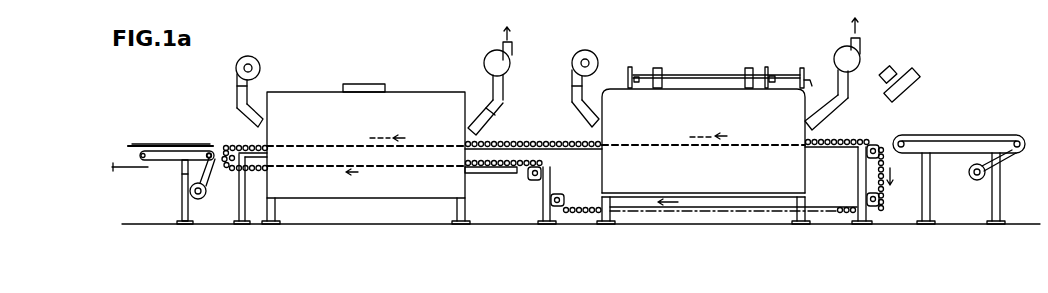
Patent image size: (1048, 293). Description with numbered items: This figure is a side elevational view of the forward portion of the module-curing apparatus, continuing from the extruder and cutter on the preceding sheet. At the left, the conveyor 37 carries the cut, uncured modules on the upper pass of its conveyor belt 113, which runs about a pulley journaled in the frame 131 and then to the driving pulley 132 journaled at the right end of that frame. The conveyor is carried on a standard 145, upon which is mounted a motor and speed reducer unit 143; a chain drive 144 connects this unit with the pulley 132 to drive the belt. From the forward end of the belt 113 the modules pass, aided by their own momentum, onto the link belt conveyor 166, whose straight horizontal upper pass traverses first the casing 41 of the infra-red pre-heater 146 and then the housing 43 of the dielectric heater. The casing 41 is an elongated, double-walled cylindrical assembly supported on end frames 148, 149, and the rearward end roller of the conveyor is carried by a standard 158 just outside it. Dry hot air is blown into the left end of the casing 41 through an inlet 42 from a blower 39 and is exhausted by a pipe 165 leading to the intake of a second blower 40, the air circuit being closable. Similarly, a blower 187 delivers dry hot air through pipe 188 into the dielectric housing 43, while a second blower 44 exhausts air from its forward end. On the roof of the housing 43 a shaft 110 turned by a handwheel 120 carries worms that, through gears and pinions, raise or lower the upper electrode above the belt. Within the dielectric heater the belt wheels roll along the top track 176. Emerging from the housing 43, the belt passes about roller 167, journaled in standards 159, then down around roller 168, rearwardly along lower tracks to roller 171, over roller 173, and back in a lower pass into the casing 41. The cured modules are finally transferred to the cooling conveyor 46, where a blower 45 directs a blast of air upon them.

The conveyor 37 is at (176, 146).
The frame 131 is at (136, 146).
The driving pulley 132 is at (212, 148).
The conveyor belt 113 is at (192, 146).
The chain drive 144 is at (186, 174).
The standard 145 is at (182, 210).
The motor and speed reducer unit 143 is at (203, 214).
The standard 158 is at (243, 206).
The housing of infra-red heater 41 is at (312, 100).
The end frame 148 is at (276, 207).
The end frame 149 is at (457, 210).
The blower 39 is at (261, 63).
The inlet 42 is at (233, 117).
The second blower 40 is at (490, 64).
The pipe 165 is at (480, 100).
The infra-red pre-heater 146 is at (417, 64).
The blower 187 is at (573, 60).
The pipe 188 is at (590, 118).
The link belt conveyor 166 is at (517, 136).
The roller 173 is at (532, 181).
The roller 171 is at (562, 196).
The housing of dielectric heater 43 is at (618, 100).
The shaft 110 is at (704, 74).
The handwheel 120 is at (802, 63).
The second blower 44 is at (838, 56).
The blower 45 is at (892, 68).
The top track 176 is at (828, 146).
The standard 159 is at (860, 213).
The roller 167 is at (873, 137).
The roller 168 is at (881, 211).
The forward conveyor 46 is at (950, 143).